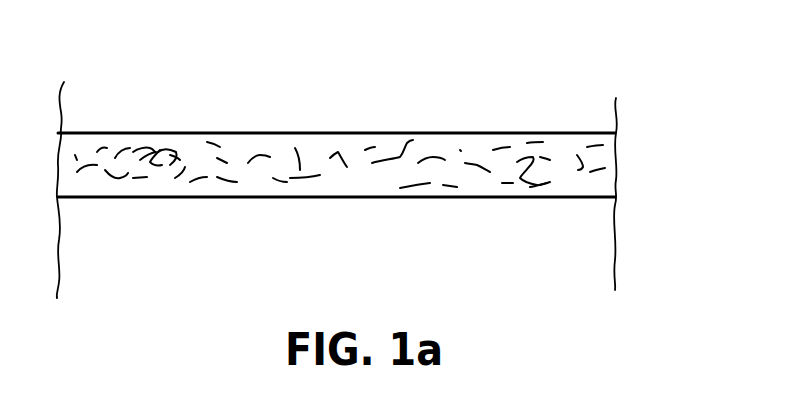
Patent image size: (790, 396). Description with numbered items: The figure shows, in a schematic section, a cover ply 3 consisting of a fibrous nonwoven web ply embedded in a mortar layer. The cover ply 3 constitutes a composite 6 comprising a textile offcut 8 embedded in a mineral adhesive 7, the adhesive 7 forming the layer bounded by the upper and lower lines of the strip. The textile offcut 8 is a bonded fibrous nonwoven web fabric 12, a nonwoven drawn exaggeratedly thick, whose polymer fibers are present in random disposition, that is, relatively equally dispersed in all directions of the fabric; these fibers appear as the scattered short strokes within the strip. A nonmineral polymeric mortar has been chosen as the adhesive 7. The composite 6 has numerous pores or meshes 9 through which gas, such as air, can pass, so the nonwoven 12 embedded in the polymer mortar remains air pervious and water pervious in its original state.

The cover ply 3 is at (337, 157).
The composite 6 is at (230, 270).
The mineral adhesive 7 is at (562, 190).
The textile offcut 8 is at (168, 155).
The pores/meshes 9 is at (566, 144).
The bonded fibrous nonwoven web fabric 12 is at (357, 180).